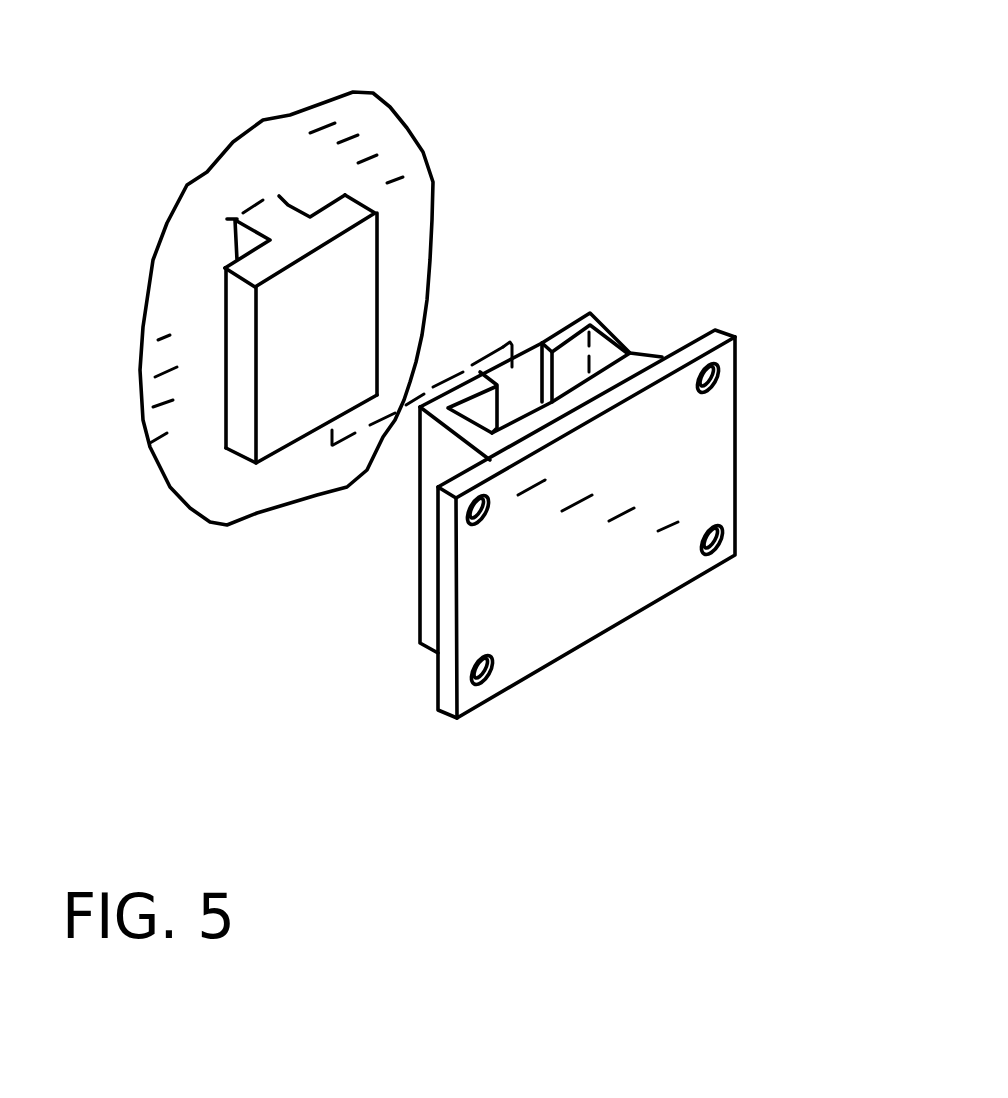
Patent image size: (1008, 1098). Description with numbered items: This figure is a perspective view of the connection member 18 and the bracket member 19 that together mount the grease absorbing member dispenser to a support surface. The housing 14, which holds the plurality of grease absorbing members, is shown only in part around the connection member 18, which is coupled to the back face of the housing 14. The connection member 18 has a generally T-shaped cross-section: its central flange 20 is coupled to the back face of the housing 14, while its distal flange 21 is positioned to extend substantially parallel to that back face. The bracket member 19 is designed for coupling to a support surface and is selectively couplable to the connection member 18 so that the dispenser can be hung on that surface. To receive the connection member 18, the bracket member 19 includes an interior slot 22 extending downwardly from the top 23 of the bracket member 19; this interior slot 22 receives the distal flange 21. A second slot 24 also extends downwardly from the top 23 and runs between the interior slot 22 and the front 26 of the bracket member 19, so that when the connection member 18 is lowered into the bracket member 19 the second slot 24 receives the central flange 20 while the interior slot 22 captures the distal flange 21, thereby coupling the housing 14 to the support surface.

The housing 14 is at (372, 120).
The connection member 18 is at (226, 448).
The bracket member 19 is at (735, 555).
The central flange 20 is at (290, 198).
The distal flange 21 is at (225, 268).
The interior slot 22 is at (603, 350).
The top 23 is at (716, 330).
The second slot 24 is at (537, 373).
The front 26 is at (420, 537).